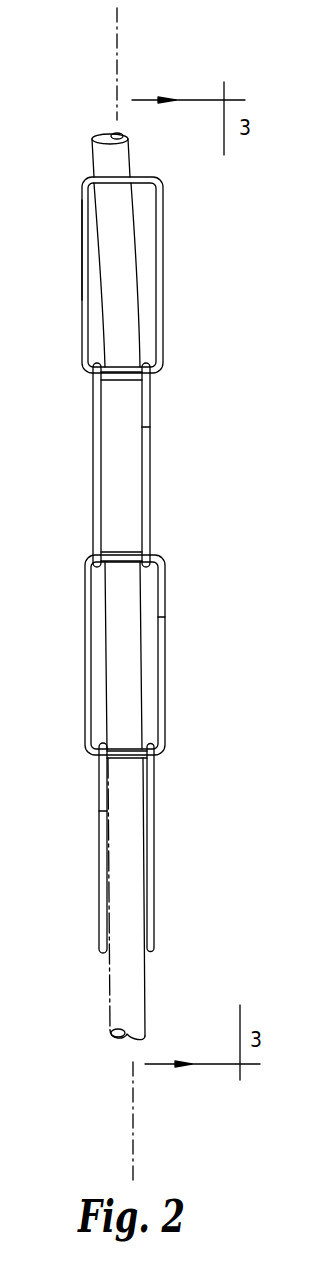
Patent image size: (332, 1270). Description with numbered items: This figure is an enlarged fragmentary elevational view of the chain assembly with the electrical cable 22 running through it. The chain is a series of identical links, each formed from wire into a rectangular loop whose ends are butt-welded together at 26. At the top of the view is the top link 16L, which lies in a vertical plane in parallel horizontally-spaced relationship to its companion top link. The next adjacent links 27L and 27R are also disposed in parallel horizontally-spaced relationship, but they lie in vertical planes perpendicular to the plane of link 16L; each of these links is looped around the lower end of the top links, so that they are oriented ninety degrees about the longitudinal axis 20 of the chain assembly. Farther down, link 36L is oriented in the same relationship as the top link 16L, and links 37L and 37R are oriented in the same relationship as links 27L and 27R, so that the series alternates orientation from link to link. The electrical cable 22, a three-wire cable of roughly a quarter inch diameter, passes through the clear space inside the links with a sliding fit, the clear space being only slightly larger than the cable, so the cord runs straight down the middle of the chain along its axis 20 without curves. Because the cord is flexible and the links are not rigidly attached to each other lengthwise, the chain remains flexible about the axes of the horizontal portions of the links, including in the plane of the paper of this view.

The longitudinal axis 20 is at (117, 32).
The electrical cable 22 is at (135, 980).
The top link 16L is at (161, 275).
The butt weld 26 is at (82, 240).
The left link of next adjacent pair 27L is at (97, 447).
The right link of next adjacent pair 27R is at (150, 458).
The chain link 36L is at (165, 643).
The chain link 37L is at (101, 858).
The chain link 37R is at (154, 840).